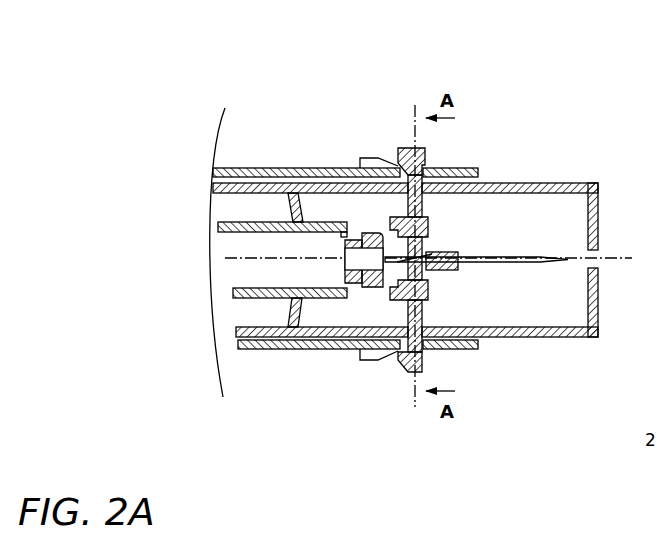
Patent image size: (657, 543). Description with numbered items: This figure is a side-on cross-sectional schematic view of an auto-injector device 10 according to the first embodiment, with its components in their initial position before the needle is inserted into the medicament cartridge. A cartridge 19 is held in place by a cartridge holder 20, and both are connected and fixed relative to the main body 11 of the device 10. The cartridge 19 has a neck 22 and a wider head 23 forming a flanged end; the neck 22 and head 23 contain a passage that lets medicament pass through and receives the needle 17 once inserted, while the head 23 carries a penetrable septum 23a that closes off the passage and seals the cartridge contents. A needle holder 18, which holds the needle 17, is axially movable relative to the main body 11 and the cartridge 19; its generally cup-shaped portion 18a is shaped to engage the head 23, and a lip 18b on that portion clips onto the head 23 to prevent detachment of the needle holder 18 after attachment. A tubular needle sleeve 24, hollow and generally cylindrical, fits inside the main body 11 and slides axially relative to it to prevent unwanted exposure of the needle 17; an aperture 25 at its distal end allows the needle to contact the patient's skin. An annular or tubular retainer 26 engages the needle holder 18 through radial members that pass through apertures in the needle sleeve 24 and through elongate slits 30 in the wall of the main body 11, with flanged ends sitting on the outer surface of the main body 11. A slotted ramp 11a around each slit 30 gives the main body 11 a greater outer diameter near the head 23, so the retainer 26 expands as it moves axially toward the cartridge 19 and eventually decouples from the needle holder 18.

The auto-injector device 10 is at (150, 86).
The main body 11 is at (307, 167).
The slotted ramp 11a is at (364, 156).
The needle 17 is at (504, 269).
The needle holder 18 is at (443, 273).
The cup-shaped portion 18a is at (405, 230).
The lip 18b is at (390, 228).
The cartridge 19 is at (249, 289).
The cartridge holder 20 is at (241, 221).
The neck 22 is at (352, 275).
The head 23 is at (372, 283).
The septum 23a is at (385, 257).
The needle sleeve 24 is at (656, 162).
The aperture 25 is at (592, 265).
The retainer 26 is at (401, 373).
The elongate slits 30 is at (377, 348).